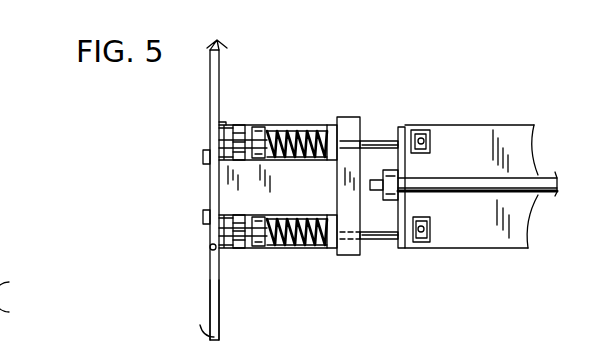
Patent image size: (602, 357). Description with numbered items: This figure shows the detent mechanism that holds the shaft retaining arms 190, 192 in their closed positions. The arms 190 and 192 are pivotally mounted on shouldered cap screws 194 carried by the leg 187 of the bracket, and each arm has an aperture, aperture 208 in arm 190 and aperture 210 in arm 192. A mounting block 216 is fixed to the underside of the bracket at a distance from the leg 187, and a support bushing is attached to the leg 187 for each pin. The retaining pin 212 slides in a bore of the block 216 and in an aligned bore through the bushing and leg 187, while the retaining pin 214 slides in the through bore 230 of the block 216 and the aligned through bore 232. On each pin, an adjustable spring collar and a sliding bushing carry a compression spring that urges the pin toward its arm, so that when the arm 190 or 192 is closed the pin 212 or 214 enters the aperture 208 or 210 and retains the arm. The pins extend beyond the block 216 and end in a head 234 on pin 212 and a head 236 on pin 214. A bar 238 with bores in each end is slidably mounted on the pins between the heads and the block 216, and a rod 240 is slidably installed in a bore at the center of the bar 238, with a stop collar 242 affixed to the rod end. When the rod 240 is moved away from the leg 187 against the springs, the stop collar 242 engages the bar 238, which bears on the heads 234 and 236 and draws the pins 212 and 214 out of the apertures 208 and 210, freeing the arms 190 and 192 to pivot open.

The leg 187 is at (223, 122).
The shaft retaining arm 190 is at (208, 78).
The shaft retaining arm 192 is at (210, 290).
The shouldered cap screws 194 is at (203, 212).
The aperture 208 is at (210, 248).
The aperture 210 is at (210, 122).
The retaining pin 212 is at (388, 140).
The retaining pin 214 is at (387, 239).
The mounting block 216 is at (338, 175).
The through bore 230 is at (380, 245).
The through bore 232 is at (205, 229).
The head 234 is at (428, 140).
The head 236 is at (432, 232).
The bar 238 is at (405, 210).
The rod 240 is at (502, 177).
The stop collar 242 is at (398, 167).